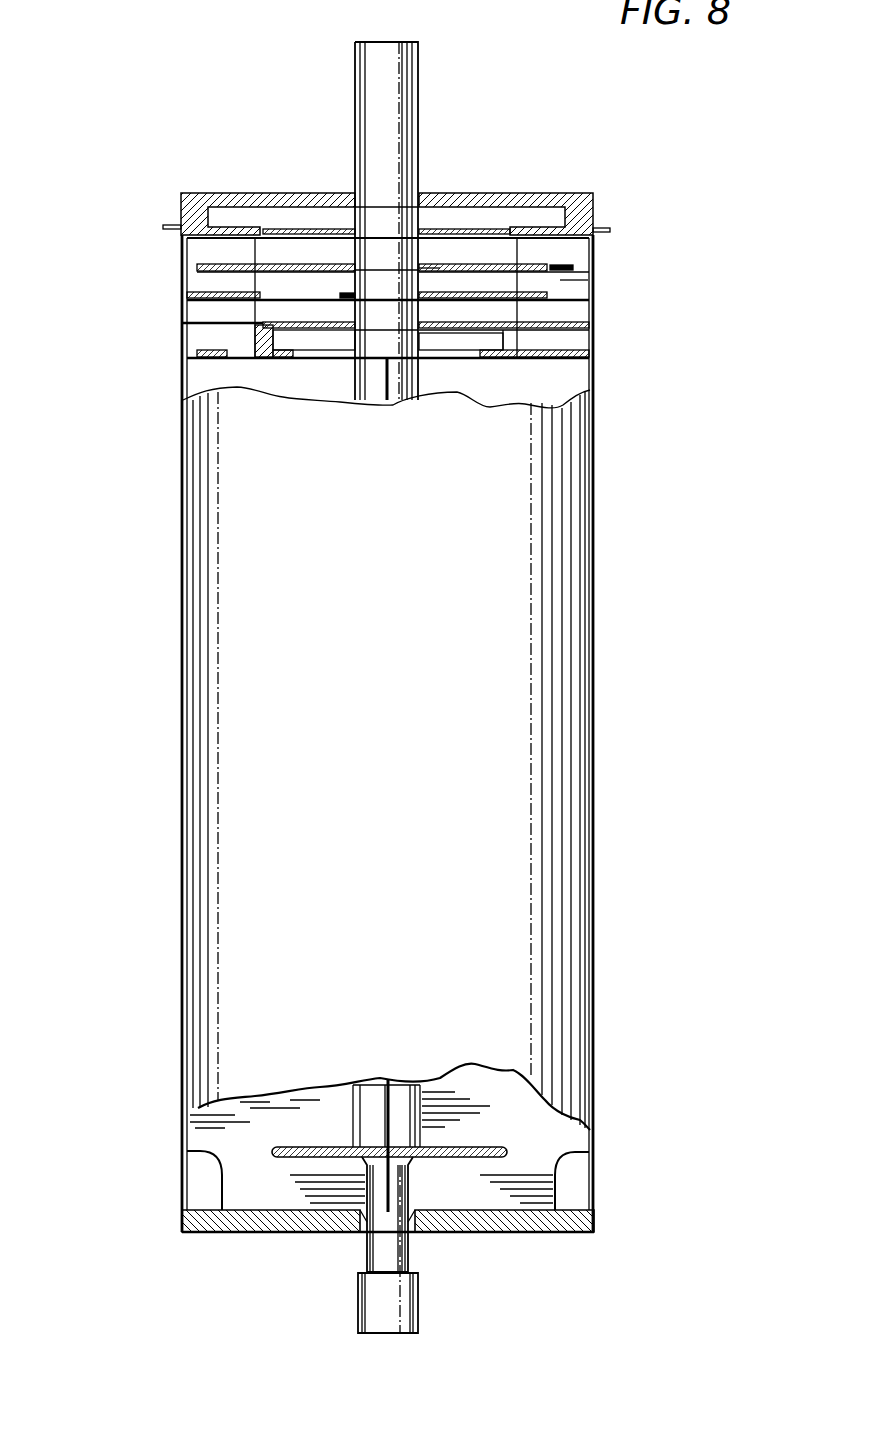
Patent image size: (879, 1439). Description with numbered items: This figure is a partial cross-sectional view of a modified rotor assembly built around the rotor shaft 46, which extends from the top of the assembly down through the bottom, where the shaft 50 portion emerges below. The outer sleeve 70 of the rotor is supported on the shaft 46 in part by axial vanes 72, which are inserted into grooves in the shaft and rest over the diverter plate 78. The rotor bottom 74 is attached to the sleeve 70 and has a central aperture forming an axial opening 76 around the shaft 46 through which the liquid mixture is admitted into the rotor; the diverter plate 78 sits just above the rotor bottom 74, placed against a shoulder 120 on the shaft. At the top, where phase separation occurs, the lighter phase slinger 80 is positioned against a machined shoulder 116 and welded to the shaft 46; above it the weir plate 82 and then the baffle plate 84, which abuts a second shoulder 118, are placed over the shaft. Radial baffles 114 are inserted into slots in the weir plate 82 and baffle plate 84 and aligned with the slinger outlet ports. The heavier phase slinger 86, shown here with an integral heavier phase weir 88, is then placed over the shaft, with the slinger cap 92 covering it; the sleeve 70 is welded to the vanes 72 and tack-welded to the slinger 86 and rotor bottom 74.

The shaft 46 is at (387, 1243).
The inlet tube 50 is at (378, 110).
The outer sleeve 70 is at (265, 732).
The axial vanes 72 is at (485, 1087).
The rotor bottom 74 is at (235, 1222).
The axial opening 76 is at (355, 1218).
The diverter plate 78 is at (310, 1145).
The lighter phase slinger 80 is at (278, 358).
The weir plate 82 is at (237, 298).
The baffle plate 84 is at (245, 270).
The heavier phase slinger 86 is at (178, 210).
The heavier phase weir 88 is at (567, 240).
The slinger cap 92 is at (278, 193).
The radial baffles 114 is at (575, 280).
The shoulder 116 is at (422, 332).
The second shoulder 118 is at (422, 272).
The shoulder 120 is at (427, 1142).